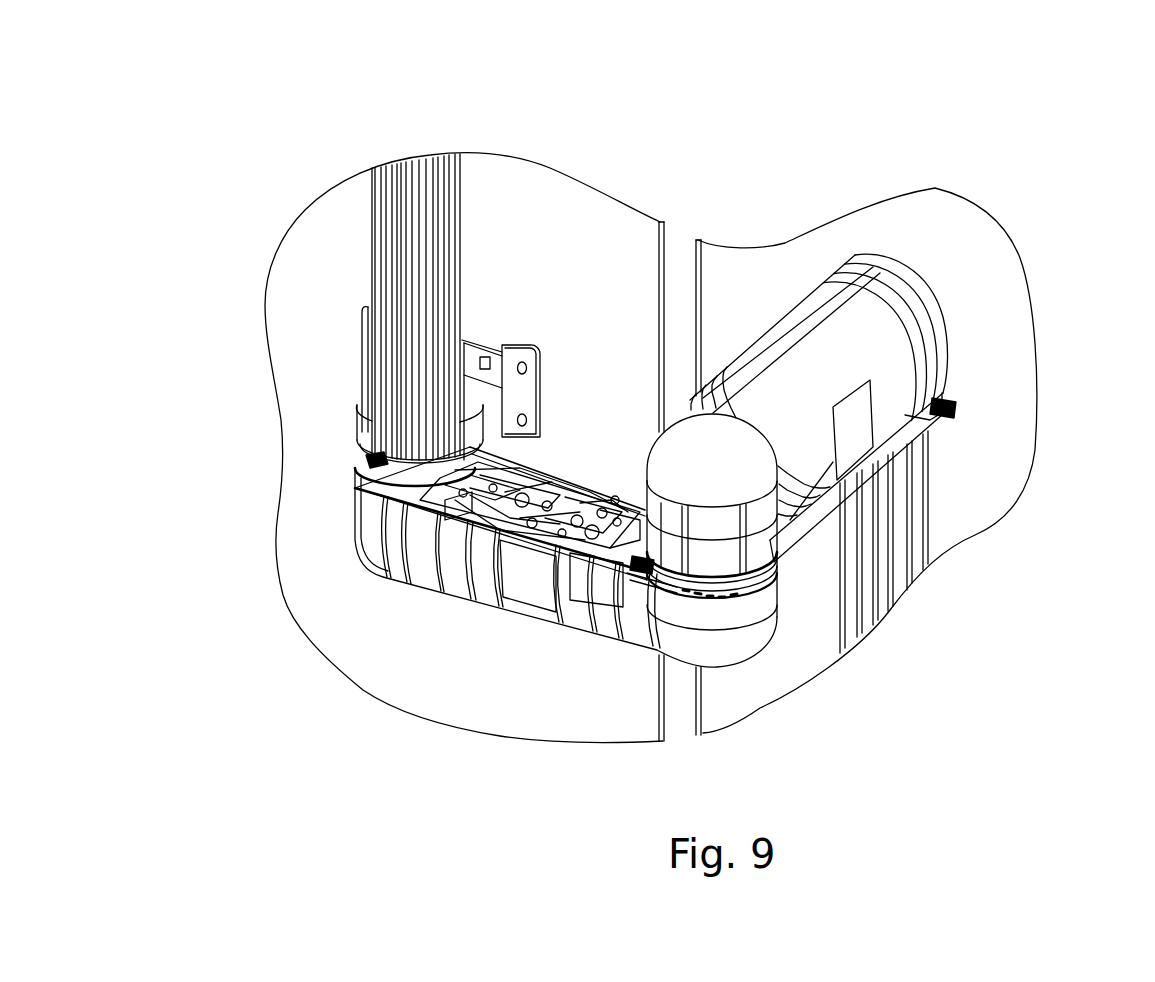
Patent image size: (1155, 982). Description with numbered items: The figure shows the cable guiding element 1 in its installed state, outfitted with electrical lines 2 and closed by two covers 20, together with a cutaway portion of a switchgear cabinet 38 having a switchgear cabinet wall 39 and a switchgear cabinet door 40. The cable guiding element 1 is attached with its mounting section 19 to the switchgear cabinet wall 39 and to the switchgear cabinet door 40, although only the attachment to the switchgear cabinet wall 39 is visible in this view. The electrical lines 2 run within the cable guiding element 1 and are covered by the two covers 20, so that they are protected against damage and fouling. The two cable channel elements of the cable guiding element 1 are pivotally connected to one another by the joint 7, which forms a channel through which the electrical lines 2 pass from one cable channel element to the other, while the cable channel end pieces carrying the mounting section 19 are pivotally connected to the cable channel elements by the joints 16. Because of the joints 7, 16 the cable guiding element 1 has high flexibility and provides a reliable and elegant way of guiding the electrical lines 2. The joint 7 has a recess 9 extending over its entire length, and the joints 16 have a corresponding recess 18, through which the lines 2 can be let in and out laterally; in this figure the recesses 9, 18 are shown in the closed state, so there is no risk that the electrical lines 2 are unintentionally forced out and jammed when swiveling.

The cable guiding element 1 is at (1005, 165).
The electrical lines 2 is at (445, 232).
The joint 7 is at (780, 557).
The recess 9 is at (720, 577).
The joint 16 is at (342, 455).
The recess 18 is at (355, 438).
The mounting section 19 is at (522, 385).
The cover 20 is at (922, 303).
The switchgear cabinet 38 is at (678, 248).
The switchgear cabinet wall 39 is at (615, 227).
The switchgear cabinet door 40 is at (762, 272).